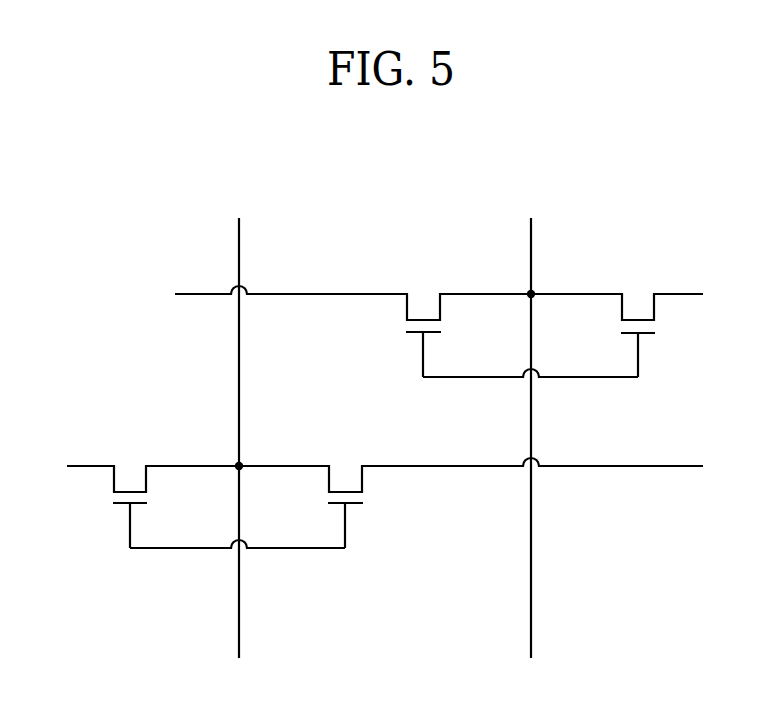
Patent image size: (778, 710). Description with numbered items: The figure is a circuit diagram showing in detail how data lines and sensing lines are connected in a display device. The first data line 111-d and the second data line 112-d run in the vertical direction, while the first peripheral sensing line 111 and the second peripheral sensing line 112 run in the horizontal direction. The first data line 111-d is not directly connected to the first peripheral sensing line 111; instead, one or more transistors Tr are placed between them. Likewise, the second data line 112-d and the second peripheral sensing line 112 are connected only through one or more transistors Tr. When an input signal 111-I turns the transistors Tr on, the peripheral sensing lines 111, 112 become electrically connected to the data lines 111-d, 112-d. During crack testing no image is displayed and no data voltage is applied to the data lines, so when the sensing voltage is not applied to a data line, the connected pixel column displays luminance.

The first data line 111-d is at (239, 232).
The second data line 112-d is at (531, 232).
The second peripheral sensing line 112 is at (352, 296).
The first peripheral sensing line 111 is at (471, 468).
The input signal 111-I is at (603, 377).
The transistor Tr is at (384, 404).